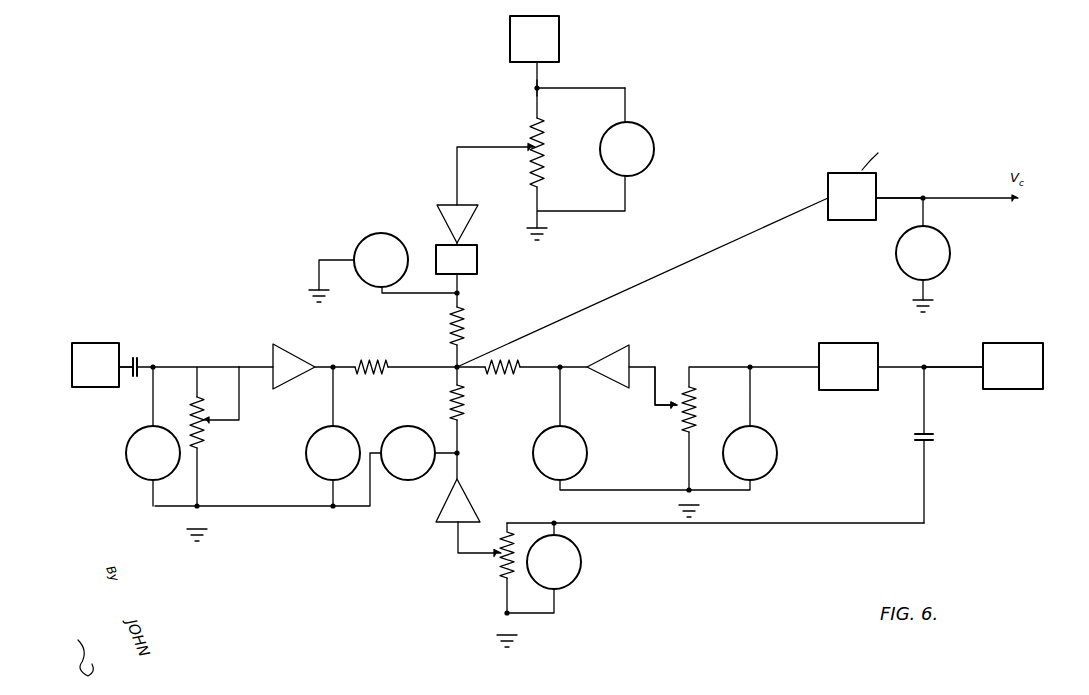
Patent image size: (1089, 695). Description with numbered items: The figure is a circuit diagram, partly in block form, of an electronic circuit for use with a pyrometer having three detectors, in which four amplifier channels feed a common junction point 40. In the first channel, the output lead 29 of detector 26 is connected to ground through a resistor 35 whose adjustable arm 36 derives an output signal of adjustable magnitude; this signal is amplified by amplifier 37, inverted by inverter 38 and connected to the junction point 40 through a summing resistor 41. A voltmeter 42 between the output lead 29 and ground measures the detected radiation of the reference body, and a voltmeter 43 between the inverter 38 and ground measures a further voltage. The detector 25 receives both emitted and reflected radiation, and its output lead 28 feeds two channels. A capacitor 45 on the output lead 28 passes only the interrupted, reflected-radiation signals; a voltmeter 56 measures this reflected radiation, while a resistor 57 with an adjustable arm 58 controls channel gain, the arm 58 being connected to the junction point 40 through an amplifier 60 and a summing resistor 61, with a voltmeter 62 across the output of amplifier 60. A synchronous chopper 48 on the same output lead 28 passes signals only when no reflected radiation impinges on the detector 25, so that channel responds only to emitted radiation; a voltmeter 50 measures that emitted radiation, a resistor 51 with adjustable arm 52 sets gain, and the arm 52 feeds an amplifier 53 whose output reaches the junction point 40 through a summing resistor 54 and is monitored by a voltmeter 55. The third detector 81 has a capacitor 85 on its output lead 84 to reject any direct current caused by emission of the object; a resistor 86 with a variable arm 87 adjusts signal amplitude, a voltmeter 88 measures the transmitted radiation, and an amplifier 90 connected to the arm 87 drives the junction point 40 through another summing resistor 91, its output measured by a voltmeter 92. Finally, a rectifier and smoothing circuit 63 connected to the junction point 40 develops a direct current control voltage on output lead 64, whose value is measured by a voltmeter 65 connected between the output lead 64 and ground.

The detector 26 is at (510, 45).
The output lead 29 is at (537, 81).
The resistor 35 is at (541, 149).
The adjustable arm 36 is at (500, 150).
The voltmeter 42 is at (651, 147).
The amplifier 37 is at (437, 213).
The inverter 38 is at (477, 252).
The voltmeter 43 is at (370, 236).
The summing resistor 41 is at (464, 323).
The junction point 40 is at (455, 365).
The summing resistor 91 is at (375, 358).
The amplifier 90 is at (283, 355).
The summing resistor 54 is at (510, 360).
The amplifier 53 is at (616, 350).
The summing resistor 61 is at (464, 412).
The voltmeter 62 is at (421, 428).
The amplifier 60 is at (448, 514).
The adjustable arm 58 is at (480, 556).
The resistor 57 is at (503, 577).
The voltmeter 56 is at (579, 568).
The voltmeter 55 is at (585, 455).
The resistor 51 is at (694, 408).
The adjustable arm 52 is at (660, 408).
The voltmeter 50 is at (775, 447).
The synchronous chopper 48 is at (866, 359).
The output lead 28 is at (962, 364).
The detector 25 is at (1010, 390).
The capacitor 45 is at (917, 440).
The rectifier and smoothing circuit 63 is at (830, 216).
The output lead 64 is at (905, 196).
The voltmeter 65 is at (949, 252).
The output lead 84 is at (118, 349).
The capacitor 85 is at (142, 359).
The resistor 86 is at (200, 401).
The variable arm 87 is at (224, 423).
The voltmeter 88 is at (128, 457).
The detector 81 is at (84, 386).
The voltmeter 92 is at (307, 462).